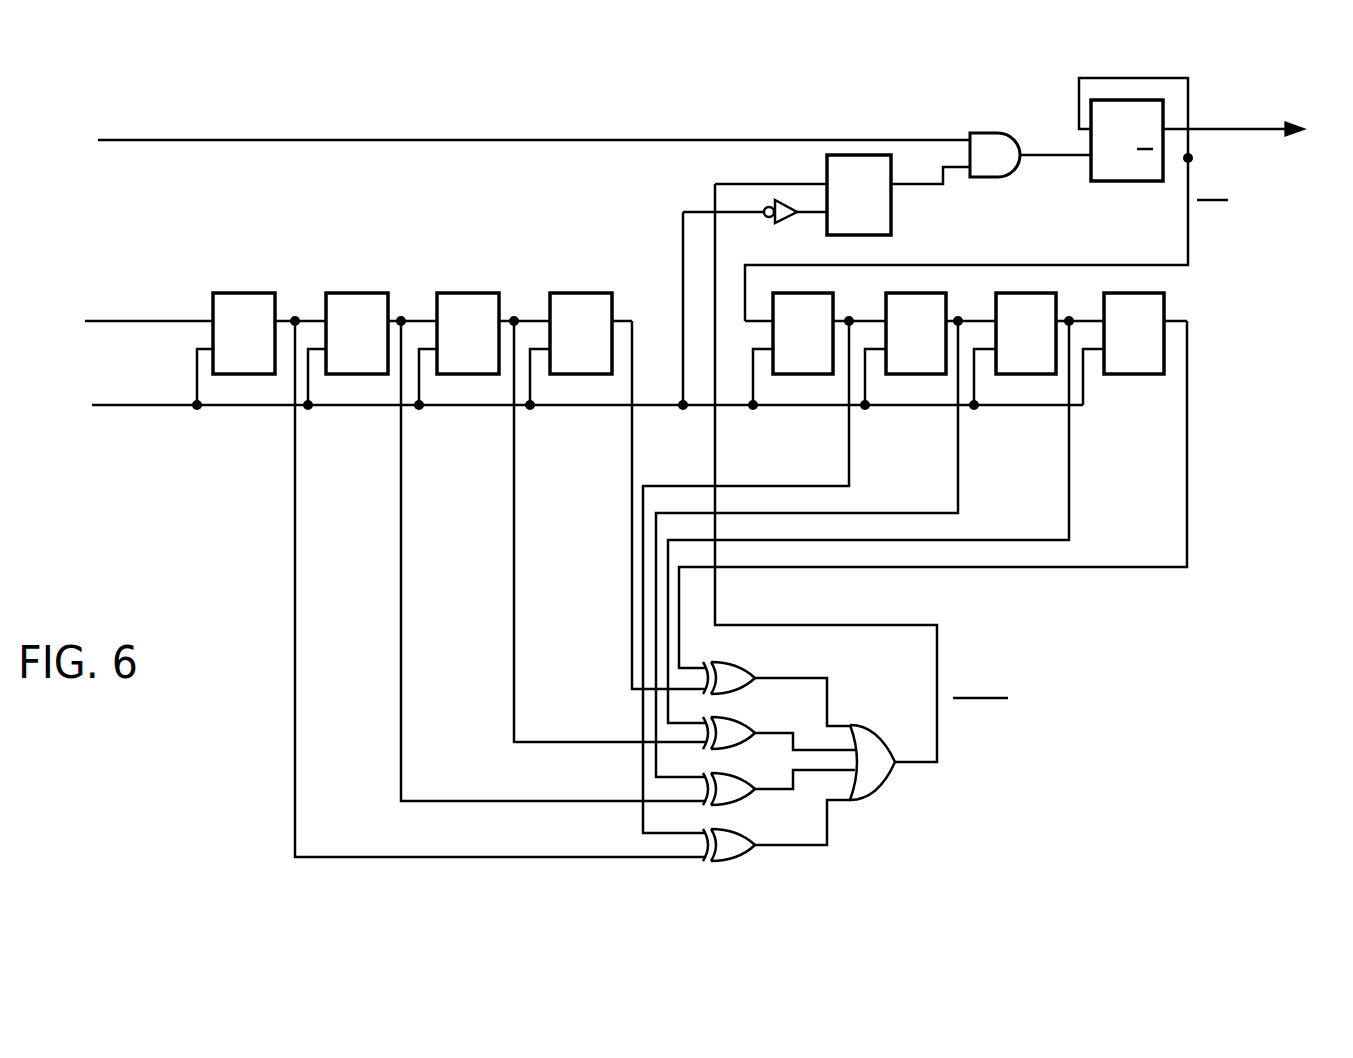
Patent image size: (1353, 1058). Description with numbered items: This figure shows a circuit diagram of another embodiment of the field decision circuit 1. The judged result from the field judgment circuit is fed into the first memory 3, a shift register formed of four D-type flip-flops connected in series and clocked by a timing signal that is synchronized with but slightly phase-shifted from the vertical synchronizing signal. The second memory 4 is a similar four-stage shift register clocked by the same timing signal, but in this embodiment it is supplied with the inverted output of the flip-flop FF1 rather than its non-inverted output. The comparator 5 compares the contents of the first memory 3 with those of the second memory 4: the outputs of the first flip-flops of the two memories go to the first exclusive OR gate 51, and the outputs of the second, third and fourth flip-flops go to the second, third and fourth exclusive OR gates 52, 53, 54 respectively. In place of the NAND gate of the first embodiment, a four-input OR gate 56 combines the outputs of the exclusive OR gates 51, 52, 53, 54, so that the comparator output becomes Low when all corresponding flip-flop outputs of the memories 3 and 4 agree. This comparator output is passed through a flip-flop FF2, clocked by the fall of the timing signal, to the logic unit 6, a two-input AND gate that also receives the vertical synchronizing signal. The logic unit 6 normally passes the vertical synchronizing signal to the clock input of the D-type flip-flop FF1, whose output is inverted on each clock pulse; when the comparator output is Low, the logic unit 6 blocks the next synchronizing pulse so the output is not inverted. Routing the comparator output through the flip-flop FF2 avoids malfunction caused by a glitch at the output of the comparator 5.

The field decision circuit 1 is at (1110, 688).
The first memory 3 is at (427, 260).
The second memory 4 is at (1190, 300).
The comparator 5 is at (852, 838).
The logic unit 6 is at (983, 133).
The first exclusive OR gate 51 is at (728, 863).
The second exclusive OR gate 52 is at (743, 802).
The third exclusive OR gate 53 is at (745, 728).
The fourth exclusive OR gate 54 is at (748, 672).
The four-input OR gate 56 is at (875, 780).
The flip-flop FF1 is at (1163, 118).
The flip-flop FF2 is at (892, 193).